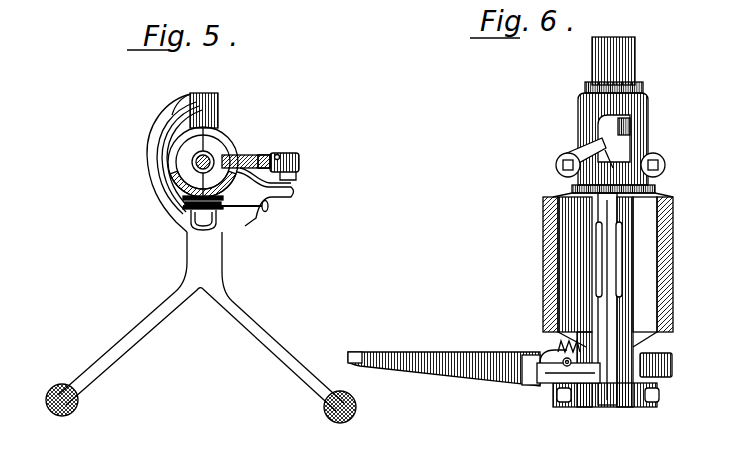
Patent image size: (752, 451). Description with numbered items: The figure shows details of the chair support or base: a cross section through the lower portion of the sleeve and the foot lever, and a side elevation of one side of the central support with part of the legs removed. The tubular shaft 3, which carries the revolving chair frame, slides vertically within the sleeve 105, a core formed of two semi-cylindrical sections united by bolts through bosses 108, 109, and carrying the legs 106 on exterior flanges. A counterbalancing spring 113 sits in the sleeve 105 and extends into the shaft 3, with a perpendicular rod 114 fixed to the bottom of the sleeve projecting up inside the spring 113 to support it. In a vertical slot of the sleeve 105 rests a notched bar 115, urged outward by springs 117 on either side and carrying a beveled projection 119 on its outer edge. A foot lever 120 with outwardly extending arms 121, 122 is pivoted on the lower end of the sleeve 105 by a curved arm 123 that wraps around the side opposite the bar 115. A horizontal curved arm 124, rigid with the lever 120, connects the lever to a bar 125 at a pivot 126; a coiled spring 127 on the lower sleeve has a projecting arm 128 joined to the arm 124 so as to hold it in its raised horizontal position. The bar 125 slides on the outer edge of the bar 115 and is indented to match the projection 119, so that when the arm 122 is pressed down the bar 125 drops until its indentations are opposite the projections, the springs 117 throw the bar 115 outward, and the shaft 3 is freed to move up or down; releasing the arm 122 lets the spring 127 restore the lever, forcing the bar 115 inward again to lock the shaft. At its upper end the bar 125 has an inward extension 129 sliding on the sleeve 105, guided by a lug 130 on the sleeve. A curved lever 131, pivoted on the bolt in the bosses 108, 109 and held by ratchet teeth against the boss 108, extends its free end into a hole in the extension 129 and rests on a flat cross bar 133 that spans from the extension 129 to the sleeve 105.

In FIG. 6, the tubular shaft 3 is at (635, 62).
In FIG. 5, the sleeve 105 is at (223, 132).
In FIG. 6, the sleeve 105 is at (642, 128).
In FIG. 6, the legs 106 is at (545, 270).
In FIG. 6, the boss 108 is at (560, 173).
In FIG. 6, the boss 109 is at (664, 163).
In FIG. 5, the counterbalancing spring 113 is at (193, 158).
In FIG. 5, the perpendicular rod 114 is at (183, 143).
In FIG. 5, the notched bar 115 is at (238, 150).
In FIG. 6, the springs 117 is at (618, 278).
In FIG. 5, the projection 119 is at (183, 225).
In FIG. 5, the foot lever 120 is at (213, 260).
In FIG. 5, the arm 121 is at (112, 358).
In FIG. 5, the arm 122 is at (287, 344).
In FIG. 6, the arm 122 is at (455, 381).
In FIG. 5, the curved arm 123 is at (152, 174).
In FIG. 5, the horizontal curved arm 124 is at (263, 193).
In FIG. 6, the horizontal curved arm 124 is at (563, 381).
In FIG. 5, the bar 125 is at (264, 157).
In FIG. 6, the bar 125 is at (613, 167).
In FIG. 5, the pivot 126 is at (278, 157).
In FIG. 6, the coiled spring 127 is at (582, 343).
In FIG. 5, the projecting arm 128 is at (262, 214).
In FIG. 6, the inward extension 129 is at (608, 127).
In FIG. 6, the lug 130 is at (638, 120).
In FIG. 6, the lever 131 is at (600, 147).
In FIG. 6, the flat cross bar 133 is at (652, 179).